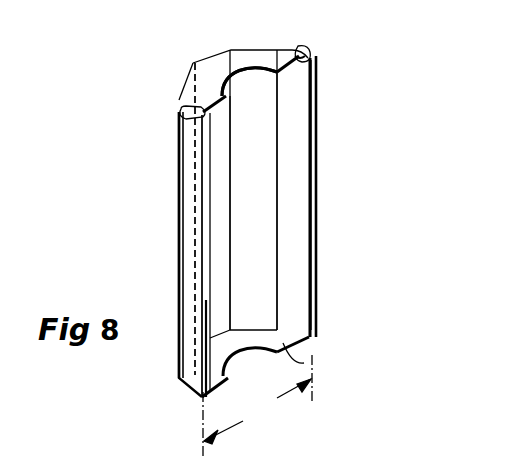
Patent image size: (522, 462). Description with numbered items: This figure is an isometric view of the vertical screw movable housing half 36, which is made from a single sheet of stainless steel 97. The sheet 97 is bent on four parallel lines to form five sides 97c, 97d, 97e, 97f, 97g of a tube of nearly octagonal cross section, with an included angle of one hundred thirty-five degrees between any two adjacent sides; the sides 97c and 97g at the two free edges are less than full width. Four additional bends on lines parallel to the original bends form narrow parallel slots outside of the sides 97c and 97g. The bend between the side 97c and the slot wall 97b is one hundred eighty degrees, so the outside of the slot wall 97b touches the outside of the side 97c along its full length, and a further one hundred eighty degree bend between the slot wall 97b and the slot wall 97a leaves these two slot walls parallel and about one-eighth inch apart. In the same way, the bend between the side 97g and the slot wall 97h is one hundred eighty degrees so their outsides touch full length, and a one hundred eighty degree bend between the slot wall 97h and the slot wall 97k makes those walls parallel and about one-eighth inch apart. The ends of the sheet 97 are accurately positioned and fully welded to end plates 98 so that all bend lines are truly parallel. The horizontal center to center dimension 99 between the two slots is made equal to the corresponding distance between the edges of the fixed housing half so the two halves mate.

The movable housing half 36 is at (320, 246).
The sheet of stainless steel 97 is at (318, 293).
The slot wall 97a is at (305, 50).
The slot wall 97b is at (300, 47).
The side 97c is at (295, 92).
The side 97d is at (251, 146).
The side 97e is at (217, 201).
The side 97f is at (178, 160).
The side 97g is at (180, 112).
The slot wall 97h is at (204, 133).
The slot wall 97k is at (186, 245).
The end plates 98 is at (258, 62).
The horizontal center to center dimension 99 is at (257, 406).